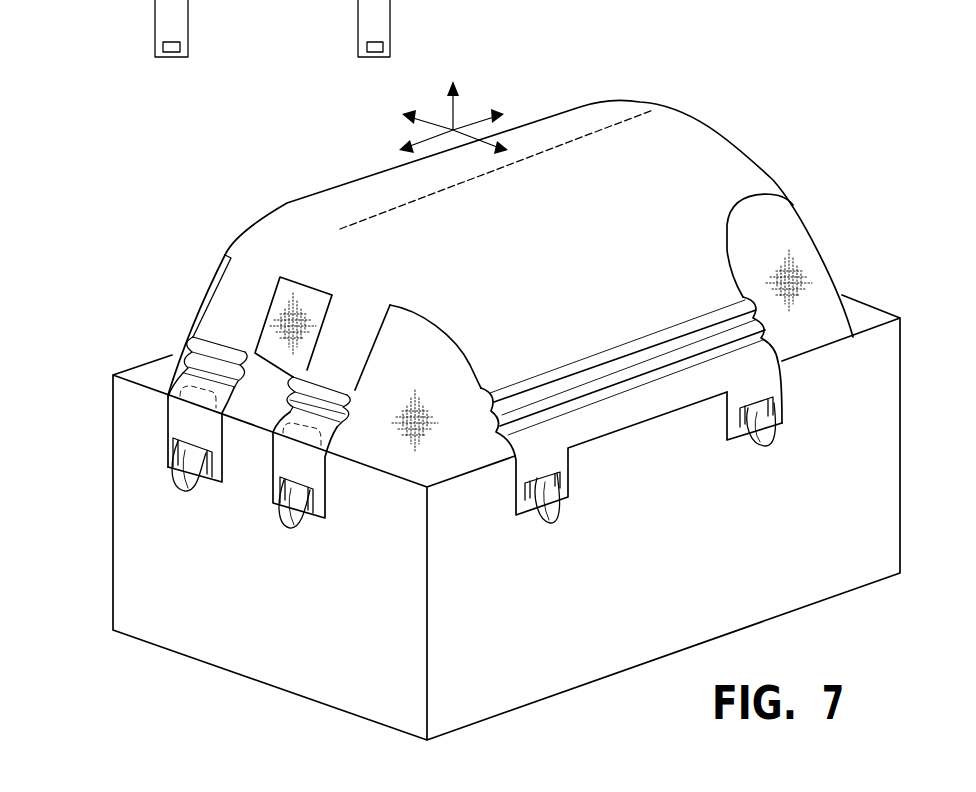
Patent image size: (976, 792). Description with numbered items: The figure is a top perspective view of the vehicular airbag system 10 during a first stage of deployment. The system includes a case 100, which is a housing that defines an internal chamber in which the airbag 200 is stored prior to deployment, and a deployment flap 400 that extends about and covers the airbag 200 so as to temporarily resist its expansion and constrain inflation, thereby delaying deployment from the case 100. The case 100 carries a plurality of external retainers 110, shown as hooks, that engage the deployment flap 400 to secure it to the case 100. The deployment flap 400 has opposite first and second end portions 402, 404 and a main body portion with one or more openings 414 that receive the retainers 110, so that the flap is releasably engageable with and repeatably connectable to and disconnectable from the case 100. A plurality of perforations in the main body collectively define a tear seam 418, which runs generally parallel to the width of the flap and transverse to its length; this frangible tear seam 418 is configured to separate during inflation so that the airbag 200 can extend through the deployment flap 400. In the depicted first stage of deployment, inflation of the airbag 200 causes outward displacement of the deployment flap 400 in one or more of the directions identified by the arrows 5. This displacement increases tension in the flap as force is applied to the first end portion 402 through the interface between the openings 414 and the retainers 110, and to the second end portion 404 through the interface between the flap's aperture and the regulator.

The vehicular airbag system 10 is at (465, 370).
The case 100 is at (80, 585).
The retainers 110 is at (177, 505).
The airbag 200 is at (457, 450).
The deployment flap 400 is at (512, 313).
The first end portion 402 is at (237, 523).
The second end portion 404 is at (802, 179).
The openings 414 is at (176, 452).
The tear seam 418 is at (574, 127).
The arrows 5 is at (453, 104).